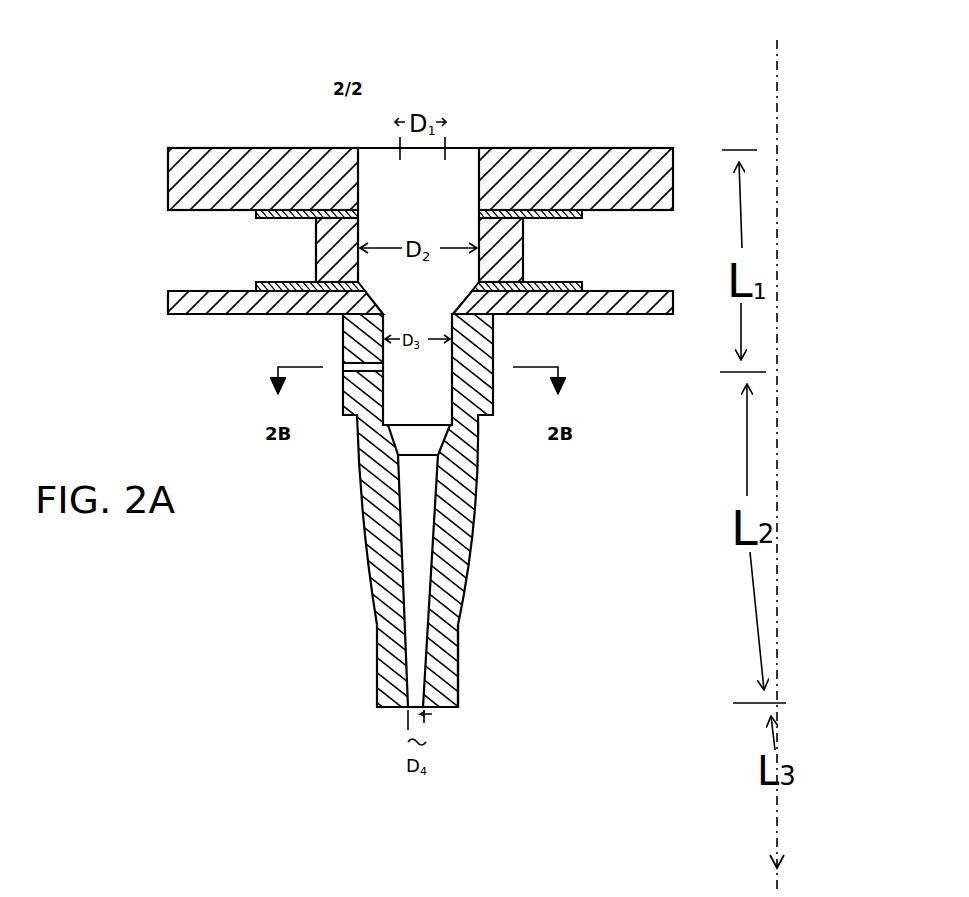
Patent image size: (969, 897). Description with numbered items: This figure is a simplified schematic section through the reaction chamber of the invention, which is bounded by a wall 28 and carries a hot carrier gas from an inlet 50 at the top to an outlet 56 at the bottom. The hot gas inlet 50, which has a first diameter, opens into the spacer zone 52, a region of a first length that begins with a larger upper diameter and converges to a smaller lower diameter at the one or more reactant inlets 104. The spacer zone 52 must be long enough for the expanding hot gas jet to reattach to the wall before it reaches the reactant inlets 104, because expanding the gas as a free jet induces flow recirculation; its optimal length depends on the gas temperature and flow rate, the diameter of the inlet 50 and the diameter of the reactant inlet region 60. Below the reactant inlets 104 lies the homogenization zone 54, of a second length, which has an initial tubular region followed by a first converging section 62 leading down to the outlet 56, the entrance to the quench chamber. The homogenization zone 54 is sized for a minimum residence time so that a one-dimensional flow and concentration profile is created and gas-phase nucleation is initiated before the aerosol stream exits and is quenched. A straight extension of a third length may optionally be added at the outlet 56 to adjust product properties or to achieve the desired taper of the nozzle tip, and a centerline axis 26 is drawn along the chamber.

The hot gas inlet 50 is at (434, 108).
The spacer zone 52 is at (467, 264).
The homogenization zone 54 is at (420, 549).
The reactant inlets 104 is at (338, 368).
The reactant inlet region 60 is at (437, 327).
The first converging section 62 is at (430, 440).
The wall 28 is at (447, 630).
The outlet 56 is at (428, 718).
The central axis 26 is at (662, 102).